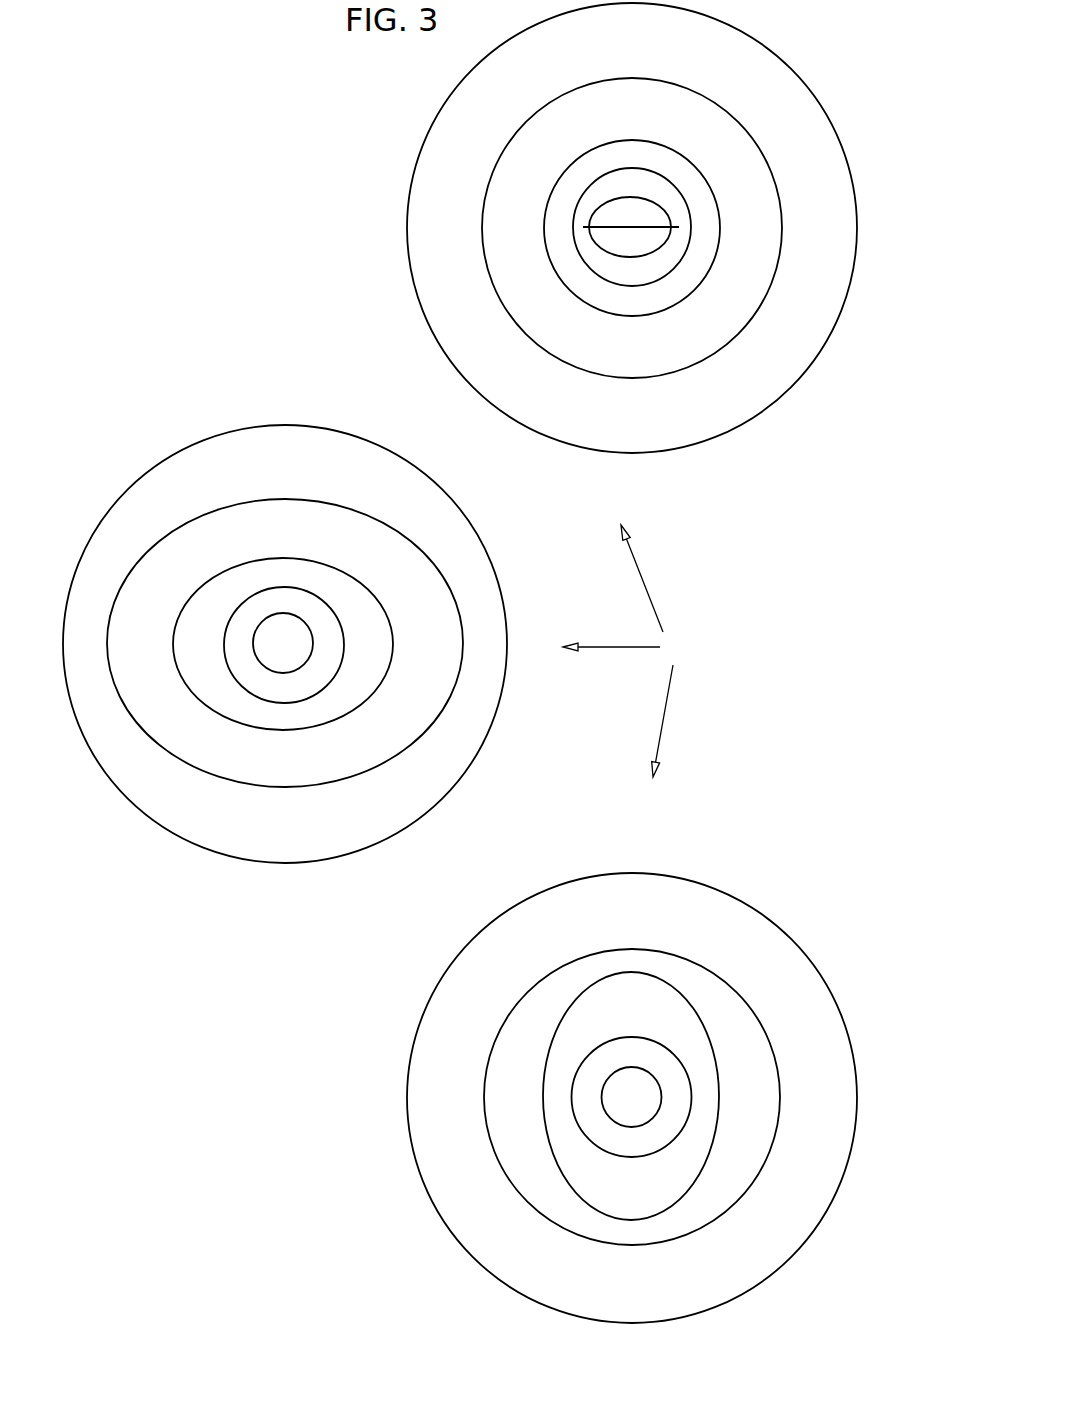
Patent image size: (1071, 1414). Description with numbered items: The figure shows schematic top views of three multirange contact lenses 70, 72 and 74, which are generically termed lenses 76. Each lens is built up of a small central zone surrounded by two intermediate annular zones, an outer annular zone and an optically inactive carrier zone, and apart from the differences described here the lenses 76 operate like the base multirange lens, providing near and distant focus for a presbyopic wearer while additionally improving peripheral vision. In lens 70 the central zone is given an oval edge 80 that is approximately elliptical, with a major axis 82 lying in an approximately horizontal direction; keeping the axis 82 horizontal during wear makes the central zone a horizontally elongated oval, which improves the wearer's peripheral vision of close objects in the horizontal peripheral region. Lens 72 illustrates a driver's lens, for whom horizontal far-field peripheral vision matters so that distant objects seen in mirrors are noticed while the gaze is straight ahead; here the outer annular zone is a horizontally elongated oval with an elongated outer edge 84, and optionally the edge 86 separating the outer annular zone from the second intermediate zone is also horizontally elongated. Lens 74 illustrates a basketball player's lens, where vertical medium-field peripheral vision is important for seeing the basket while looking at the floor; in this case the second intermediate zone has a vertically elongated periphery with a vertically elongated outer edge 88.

The multirange contact lens 70 is at (466, 401).
The multirange contact lens 72 is at (122, 812).
The multirange contact lens 74 is at (466, 1273).
The lenses 76 is at (632, 651).
The oval edge 80 is at (594, 216).
The major axis 82 is at (672, 220).
The elongated outer edge 84 is at (110, 678).
The edge 86 is at (177, 662).
The vertically elongated outer edge 88 is at (543, 1063).